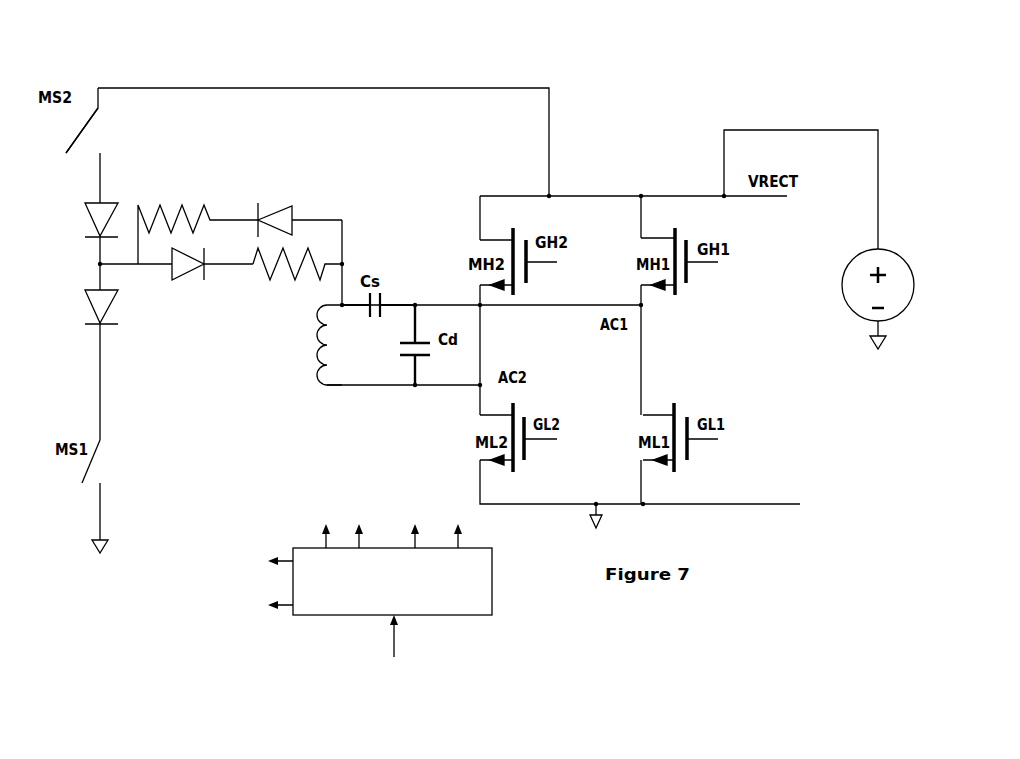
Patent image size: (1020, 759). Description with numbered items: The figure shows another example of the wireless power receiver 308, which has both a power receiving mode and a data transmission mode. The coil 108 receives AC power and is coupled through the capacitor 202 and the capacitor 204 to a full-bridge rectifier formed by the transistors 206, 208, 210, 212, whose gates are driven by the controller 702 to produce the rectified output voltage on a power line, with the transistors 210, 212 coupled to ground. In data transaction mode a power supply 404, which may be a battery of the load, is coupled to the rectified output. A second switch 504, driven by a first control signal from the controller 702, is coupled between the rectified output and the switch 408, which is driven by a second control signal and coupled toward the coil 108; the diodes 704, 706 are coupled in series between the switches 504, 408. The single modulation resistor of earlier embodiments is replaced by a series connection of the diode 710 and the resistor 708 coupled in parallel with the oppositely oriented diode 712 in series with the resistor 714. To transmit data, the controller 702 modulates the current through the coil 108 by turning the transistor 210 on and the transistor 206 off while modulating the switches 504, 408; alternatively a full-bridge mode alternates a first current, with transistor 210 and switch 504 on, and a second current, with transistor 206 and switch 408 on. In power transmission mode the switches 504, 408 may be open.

The coil 108 is at (302, 330).
The capacitor 202 is at (368, 318).
The capacitor 204 is at (405, 353).
The transistor 206 is at (517, 240).
The transistor 208 is at (676, 237).
The transistor 210 is at (527, 418).
The transistor 212 is at (676, 414).
The receiver 308 is at (100, 65).
The power supply 404 is at (880, 268).
The switch 408 is at (110, 467).
The second switch 504 is at (110, 132).
The controller 702 is at (362, 590).
The diode 704 is at (98, 220).
The diode 706 is at (95, 305).
The resistor 708 is at (177, 203).
The diode 710 is at (275, 210).
The diode 712 is at (172, 275).
The resistor 714 is at (280, 278).